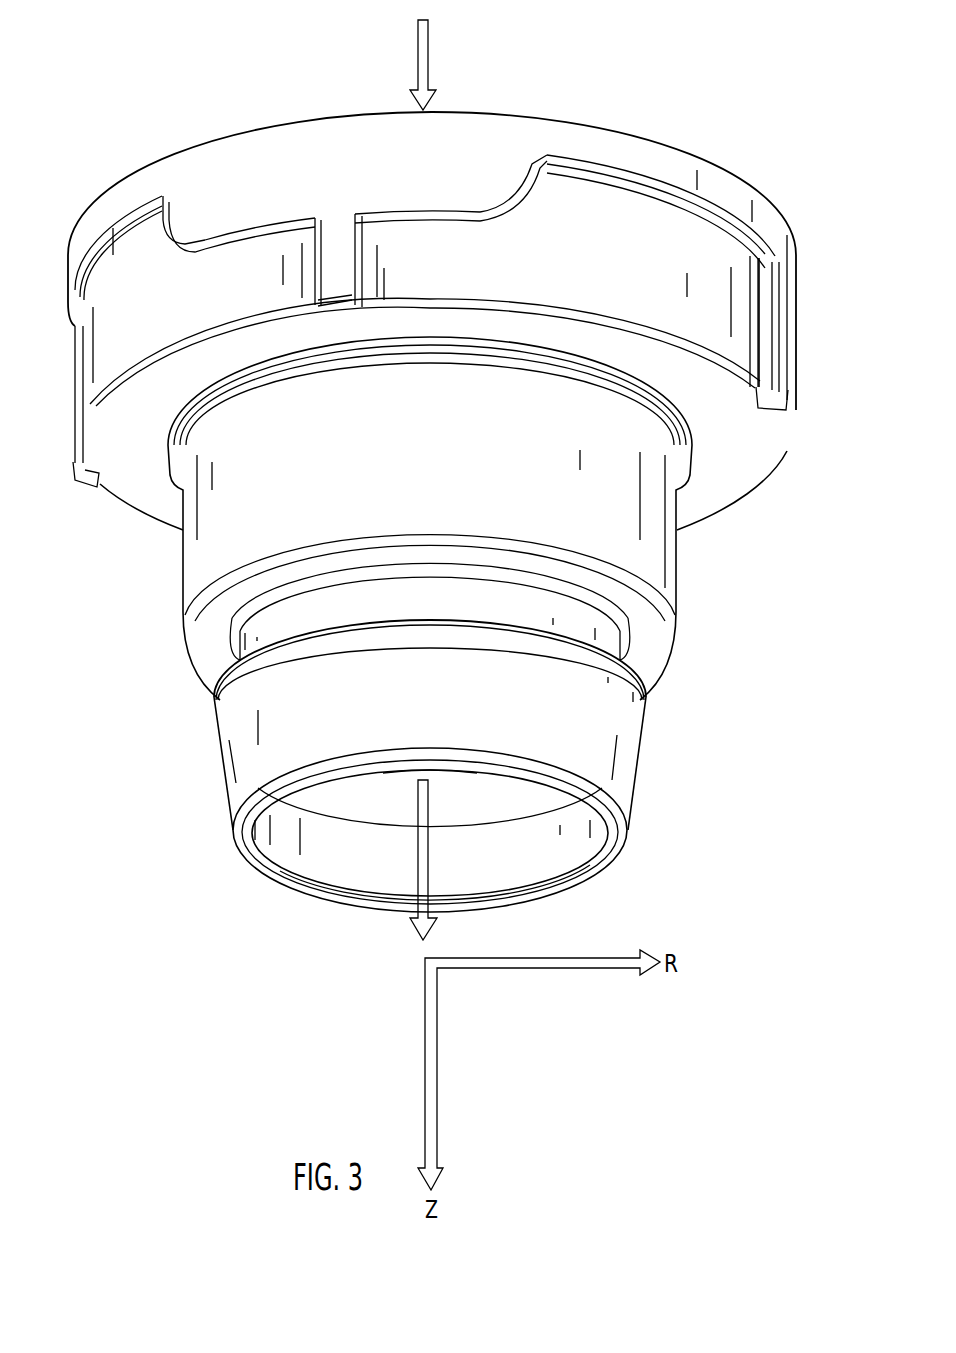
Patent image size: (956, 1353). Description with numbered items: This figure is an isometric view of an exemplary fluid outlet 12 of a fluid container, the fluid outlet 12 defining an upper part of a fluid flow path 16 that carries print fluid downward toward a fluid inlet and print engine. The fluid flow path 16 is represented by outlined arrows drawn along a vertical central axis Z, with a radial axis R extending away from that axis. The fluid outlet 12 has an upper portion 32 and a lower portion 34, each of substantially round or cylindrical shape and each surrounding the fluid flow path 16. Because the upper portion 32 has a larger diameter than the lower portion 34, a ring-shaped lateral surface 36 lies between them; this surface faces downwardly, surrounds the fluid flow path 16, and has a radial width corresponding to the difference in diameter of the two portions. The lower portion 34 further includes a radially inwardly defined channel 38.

The fluid outlet 12 is at (712, 74).
The fluid flow path 16 is at (432, 55).
The upper portion 32 is at (742, 292).
The lower portion 34 is at (650, 530).
The ring-shaped lateral surface 36 is at (130, 483).
The radially inwardly defined channel 38 is at (605, 640).